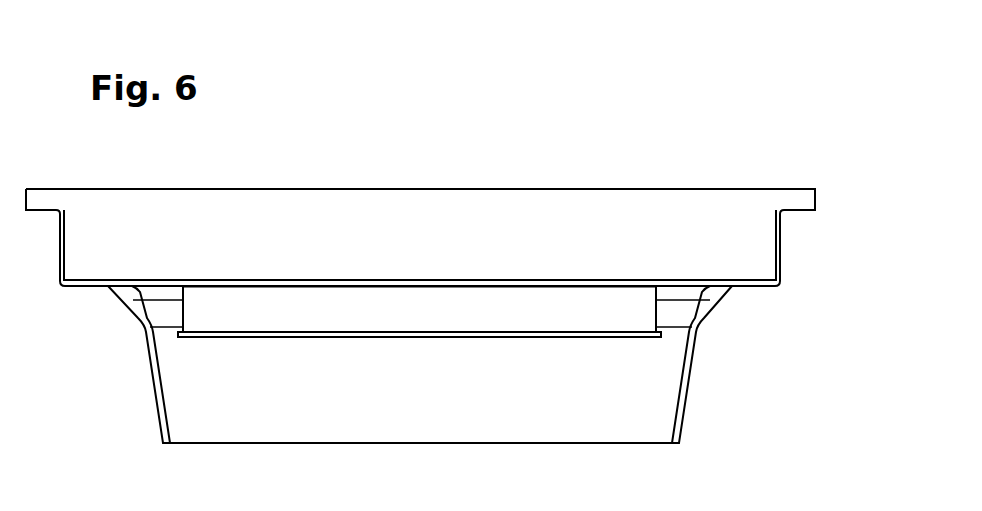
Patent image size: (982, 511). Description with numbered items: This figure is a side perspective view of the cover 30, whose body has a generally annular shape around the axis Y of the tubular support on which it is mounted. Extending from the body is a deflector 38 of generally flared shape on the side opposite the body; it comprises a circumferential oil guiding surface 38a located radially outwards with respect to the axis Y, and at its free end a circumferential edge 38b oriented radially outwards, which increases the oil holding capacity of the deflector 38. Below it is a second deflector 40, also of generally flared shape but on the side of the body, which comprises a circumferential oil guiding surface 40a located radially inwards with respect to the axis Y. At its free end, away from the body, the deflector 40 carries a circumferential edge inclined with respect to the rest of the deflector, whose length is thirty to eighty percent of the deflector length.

The cover 30 is at (722, 169).
The deflector 38 is at (419, 319).
The circumferential oil guiding surface 38a is at (414, 300).
The circumferential edge 38b is at (227, 333).
The deflector 40 is at (466, 391).
The circumferential oil guiding surface 40a is at (683, 397).